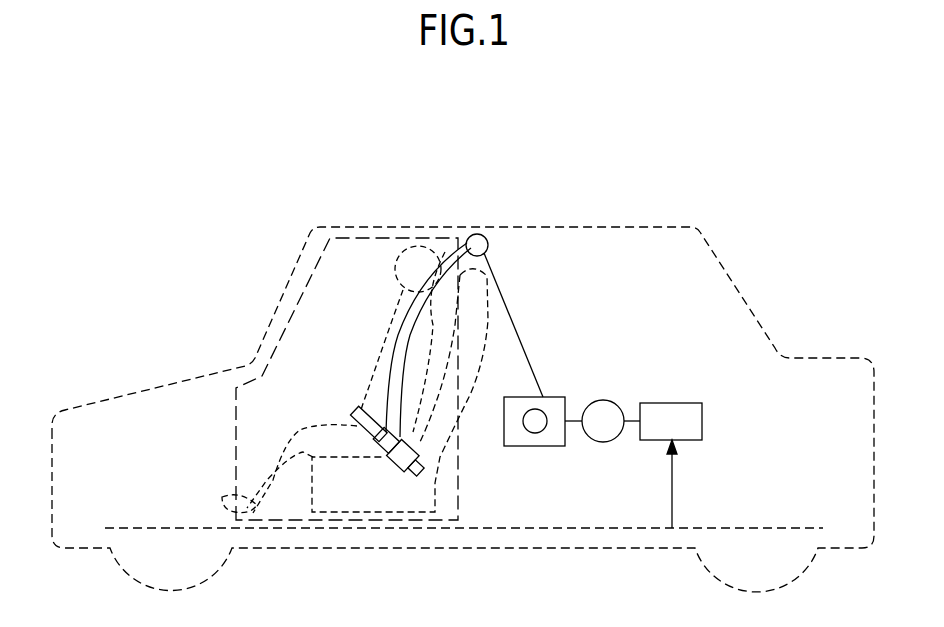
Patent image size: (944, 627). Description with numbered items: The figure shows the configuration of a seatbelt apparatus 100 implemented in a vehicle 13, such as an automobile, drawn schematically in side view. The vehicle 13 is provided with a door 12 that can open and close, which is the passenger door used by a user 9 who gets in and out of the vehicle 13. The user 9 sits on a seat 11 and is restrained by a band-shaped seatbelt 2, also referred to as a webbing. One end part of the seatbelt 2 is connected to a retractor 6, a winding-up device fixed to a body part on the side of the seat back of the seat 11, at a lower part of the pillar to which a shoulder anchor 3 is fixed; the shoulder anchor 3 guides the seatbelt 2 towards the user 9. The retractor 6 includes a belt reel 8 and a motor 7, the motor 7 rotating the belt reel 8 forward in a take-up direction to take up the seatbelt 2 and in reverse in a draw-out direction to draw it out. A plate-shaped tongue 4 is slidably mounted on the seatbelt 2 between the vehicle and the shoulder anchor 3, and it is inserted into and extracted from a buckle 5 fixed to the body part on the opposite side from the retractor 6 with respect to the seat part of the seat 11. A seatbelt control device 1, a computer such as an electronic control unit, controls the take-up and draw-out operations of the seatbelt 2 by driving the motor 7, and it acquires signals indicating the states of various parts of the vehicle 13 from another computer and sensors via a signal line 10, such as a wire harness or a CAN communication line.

The seatbelt apparatus 100 is at (463, 356).
The seatbelt control device 1 is at (672, 403).
The seatbelt 2 is at (357, 408).
The shoulder anchor 3 is at (477, 234).
The tongue 4 is at (372, 447).
The buckle 5 is at (413, 460).
The retractor 6 is at (552, 397).
The motor 7 is at (603, 400).
The belt reel 8 is at (535, 433).
The user 9 is at (422, 242).
The signal line 10 is at (589, 527).
The seat 11 is at (355, 513).
The door 12 is at (233, 438).
The vehicle 13 is at (193, 375).